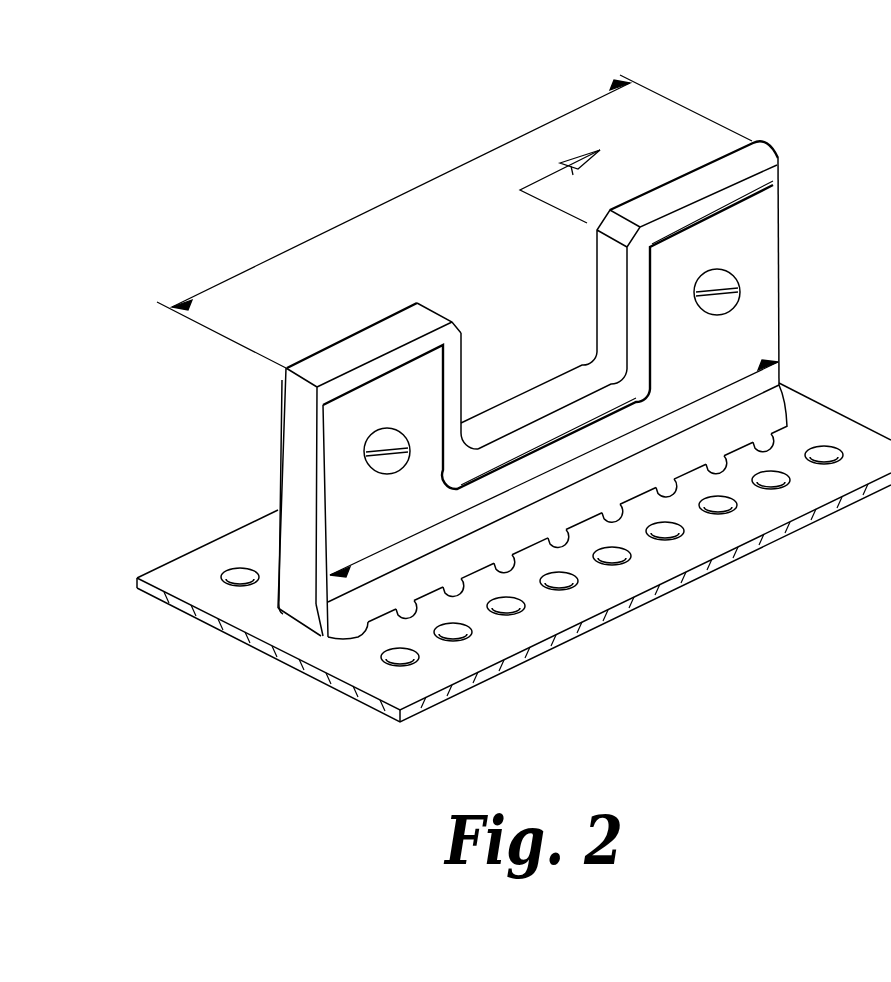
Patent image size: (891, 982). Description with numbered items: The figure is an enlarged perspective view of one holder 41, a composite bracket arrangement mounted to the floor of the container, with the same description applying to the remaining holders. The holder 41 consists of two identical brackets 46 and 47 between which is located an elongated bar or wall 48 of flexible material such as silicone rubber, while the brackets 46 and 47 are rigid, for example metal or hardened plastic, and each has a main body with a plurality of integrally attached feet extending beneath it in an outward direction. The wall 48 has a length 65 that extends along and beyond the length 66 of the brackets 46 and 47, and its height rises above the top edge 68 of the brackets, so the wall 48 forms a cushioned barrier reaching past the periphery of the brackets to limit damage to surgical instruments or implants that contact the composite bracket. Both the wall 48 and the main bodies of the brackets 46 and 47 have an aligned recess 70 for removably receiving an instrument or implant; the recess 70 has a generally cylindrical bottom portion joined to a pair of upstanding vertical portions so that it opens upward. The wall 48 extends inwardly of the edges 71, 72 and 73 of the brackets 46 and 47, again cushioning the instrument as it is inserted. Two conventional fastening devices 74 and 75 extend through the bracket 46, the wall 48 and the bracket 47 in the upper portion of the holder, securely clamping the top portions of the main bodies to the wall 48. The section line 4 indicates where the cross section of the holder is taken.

The section line 4- 4 is at (574, 363).
The holder 41 is at (524, 342).
The bracket 46 is at (280, 397).
The bracket 47 is at (752, 227).
The elongated bar or wall 48 is at (318, 365).
The length 65 is at (402, 192).
The length 66 is at (670, 410).
The top edge 68 is at (393, 370).
The recess 70 is at (495, 310).
The edge 71 is at (450, 413).
The edge 72 is at (540, 447).
The edge 73 is at (647, 283).
The fastening device 74 is at (387, 467).
The fastening device 75 is at (728, 282).